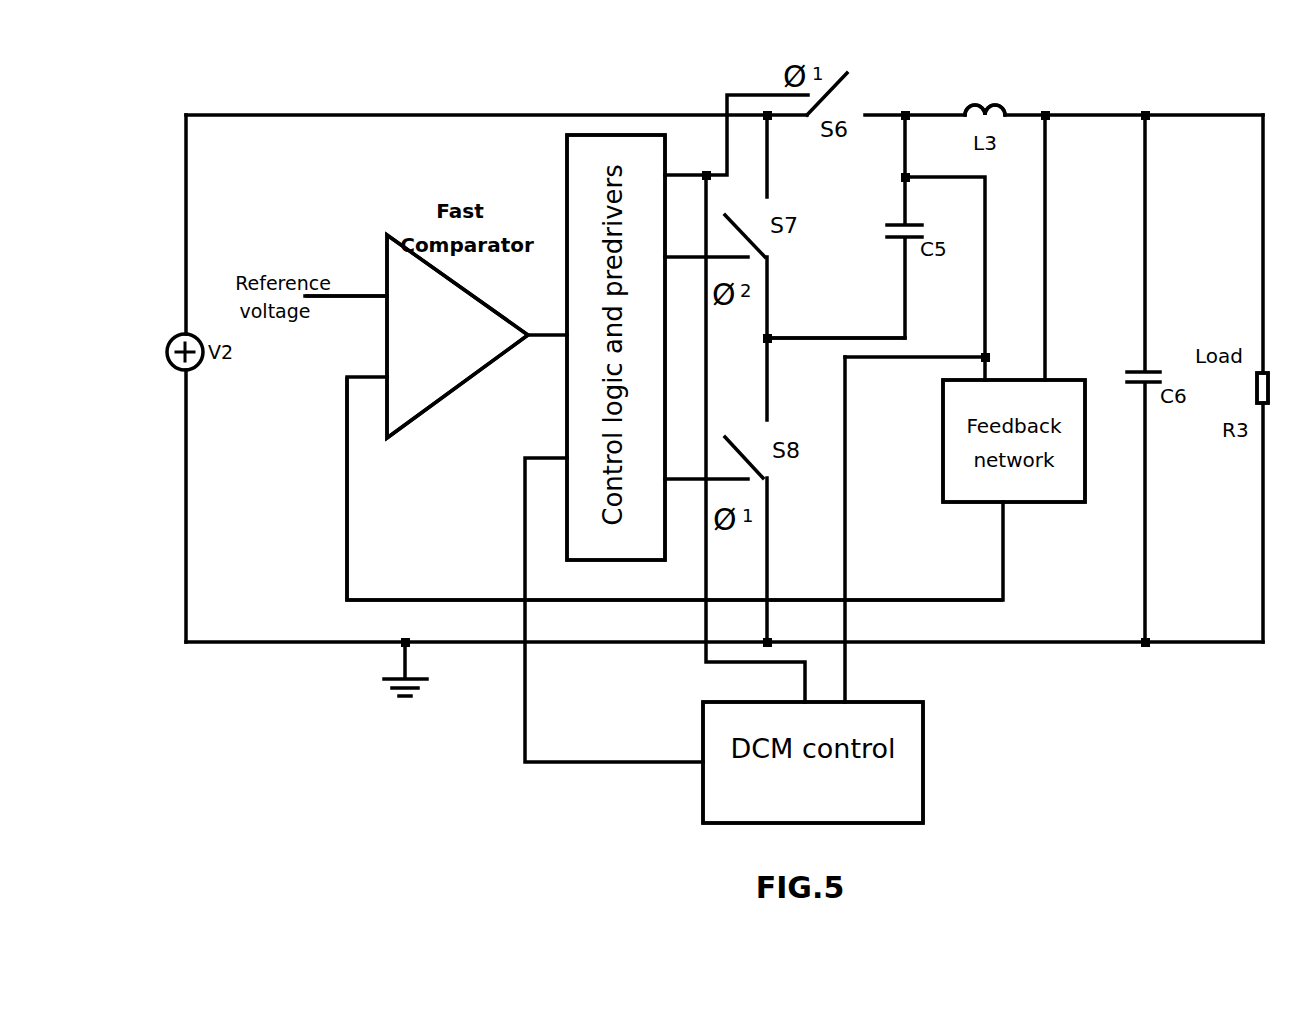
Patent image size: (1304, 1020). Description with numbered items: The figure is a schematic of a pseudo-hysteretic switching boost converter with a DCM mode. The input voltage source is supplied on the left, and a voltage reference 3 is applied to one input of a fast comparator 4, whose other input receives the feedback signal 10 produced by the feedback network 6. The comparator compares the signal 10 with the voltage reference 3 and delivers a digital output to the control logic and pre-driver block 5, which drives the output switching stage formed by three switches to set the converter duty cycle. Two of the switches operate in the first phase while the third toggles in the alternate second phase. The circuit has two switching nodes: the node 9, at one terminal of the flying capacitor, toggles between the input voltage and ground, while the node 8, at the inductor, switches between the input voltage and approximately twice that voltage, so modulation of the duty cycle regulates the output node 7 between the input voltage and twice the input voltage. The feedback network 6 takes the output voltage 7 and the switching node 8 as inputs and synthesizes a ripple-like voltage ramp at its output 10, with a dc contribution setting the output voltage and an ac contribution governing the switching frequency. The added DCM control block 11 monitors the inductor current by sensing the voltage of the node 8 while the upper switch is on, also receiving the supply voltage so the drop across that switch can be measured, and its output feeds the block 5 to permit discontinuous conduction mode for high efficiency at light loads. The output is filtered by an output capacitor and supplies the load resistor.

The voltage reference 3 is at (357, 293).
The fast comparator 4 is at (397, 233).
The control logic and output stage pre-driver block 5 is at (585, 135).
The feedback network 6 is at (1050, 360).
The output node 7 is at (1188, 115).
The switching node 8 is at (920, 108).
The switching node 9 is at (890, 338).
The feedback signal 10 is at (342, 510).
The DCM control block 11 is at (925, 755).